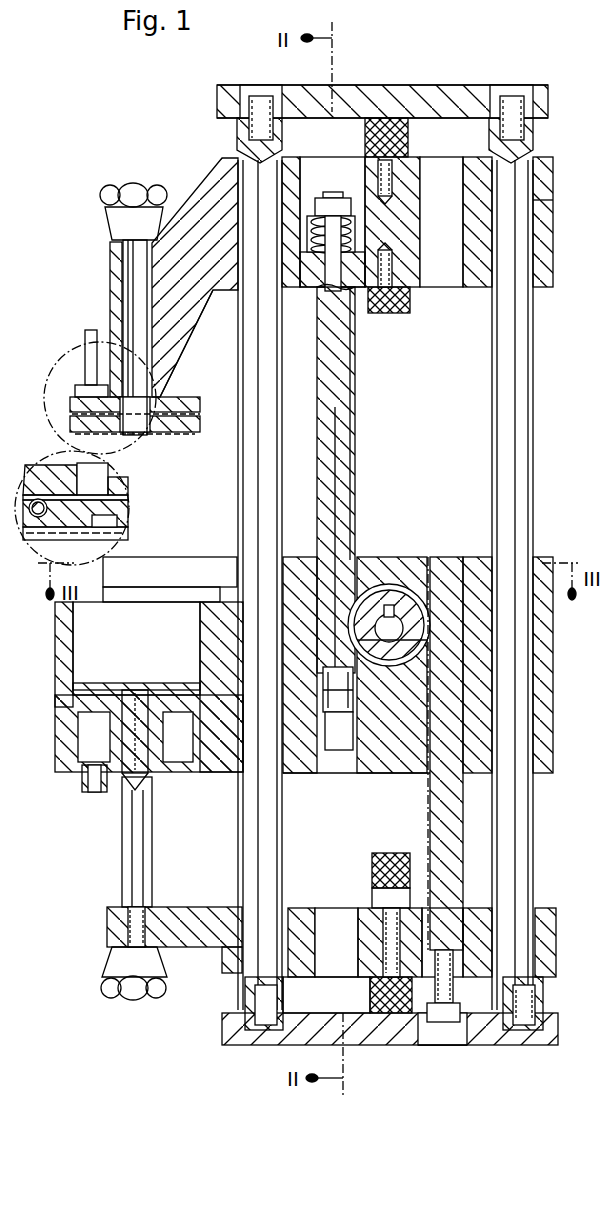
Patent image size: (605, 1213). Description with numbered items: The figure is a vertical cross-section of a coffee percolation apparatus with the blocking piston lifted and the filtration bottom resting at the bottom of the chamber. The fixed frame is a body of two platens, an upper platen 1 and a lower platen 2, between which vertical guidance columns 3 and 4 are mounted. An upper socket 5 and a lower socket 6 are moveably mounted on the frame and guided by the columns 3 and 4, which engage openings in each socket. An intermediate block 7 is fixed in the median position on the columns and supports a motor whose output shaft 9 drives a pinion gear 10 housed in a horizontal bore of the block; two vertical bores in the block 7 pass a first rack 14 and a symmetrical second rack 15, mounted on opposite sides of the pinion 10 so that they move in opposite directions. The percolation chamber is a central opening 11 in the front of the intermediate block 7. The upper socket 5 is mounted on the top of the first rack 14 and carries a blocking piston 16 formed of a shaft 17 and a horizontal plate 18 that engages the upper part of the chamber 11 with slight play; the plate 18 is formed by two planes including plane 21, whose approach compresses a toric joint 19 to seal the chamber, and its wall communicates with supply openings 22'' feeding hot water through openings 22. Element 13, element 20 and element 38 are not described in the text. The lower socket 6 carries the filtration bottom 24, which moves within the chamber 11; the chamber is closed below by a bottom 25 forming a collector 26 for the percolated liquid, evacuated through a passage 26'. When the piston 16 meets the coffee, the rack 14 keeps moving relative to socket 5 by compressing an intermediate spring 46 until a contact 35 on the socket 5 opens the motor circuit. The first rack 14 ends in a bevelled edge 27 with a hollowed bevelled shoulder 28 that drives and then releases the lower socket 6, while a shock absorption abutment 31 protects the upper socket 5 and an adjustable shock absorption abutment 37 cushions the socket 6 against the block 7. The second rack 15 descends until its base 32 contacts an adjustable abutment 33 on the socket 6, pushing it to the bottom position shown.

The upper platen 1 is at (425, 100).
The lower platen 2 is at (386, 1032).
The guidance column 3 is at (528, 500).
The guidance column 4 is at (421, 585).
The upper socket 5 is at (215, 198).
The lower socket 6 is at (190, 905).
The intermediate block 7 is at (422, 770).
The output shaft 9 is at (412, 572).
The pinion gear 10 is at (385, 568).
The percolation chamber 11 is at (95, 742).
The plate 13 is at (192, 570).
The first rack 14 is at (350, 458).
The second rack 15 is at (450, 565).
The blocking piston 16 is at (105, 291).
The shaft 17 is at (128, 268).
The horizontal plate 18 is at (195, 383).
The toric joint 19 is at (72, 402).
The O-ring 20 is at (52, 460).
The plane of plate 21 is at (73, 430).
The opening 22 is at (135, 463).
The supply opening 22'' is at (77, 359).
The filtration bottom 24 is at (118, 690).
The bottom 25 is at (180, 765).
The collector 26 is at (68, 743).
The passage 26' is at (80, 797).
The bevelled edge 27 is at (337, 755).
The bevelled shoulder 28 is at (378, 755).
The shock absorption abutment 31 is at (410, 300).
The base 32 is at (452, 930).
The adjustable abutment 33 is at (465, 965).
The contact 35 is at (568, 237).
The shock absorption abutment 37 is at (366, 870).
The cavity 38 is at (334, 916).
The intermediate spring 46 is at (303, 288).